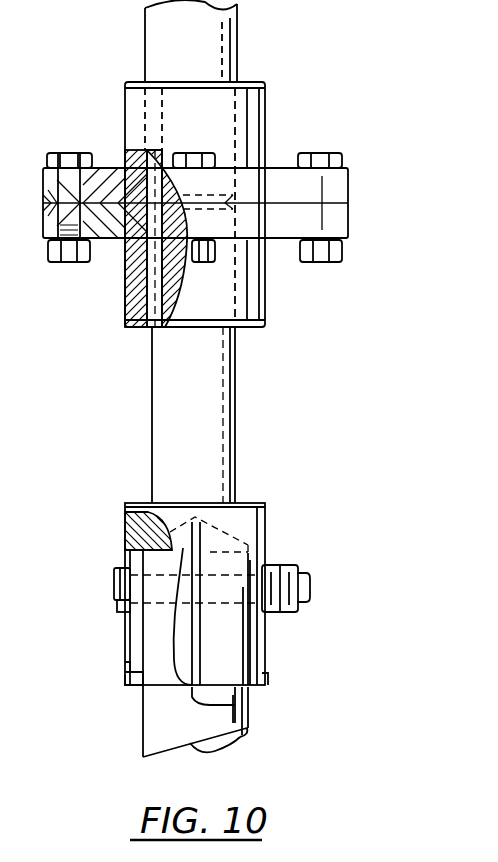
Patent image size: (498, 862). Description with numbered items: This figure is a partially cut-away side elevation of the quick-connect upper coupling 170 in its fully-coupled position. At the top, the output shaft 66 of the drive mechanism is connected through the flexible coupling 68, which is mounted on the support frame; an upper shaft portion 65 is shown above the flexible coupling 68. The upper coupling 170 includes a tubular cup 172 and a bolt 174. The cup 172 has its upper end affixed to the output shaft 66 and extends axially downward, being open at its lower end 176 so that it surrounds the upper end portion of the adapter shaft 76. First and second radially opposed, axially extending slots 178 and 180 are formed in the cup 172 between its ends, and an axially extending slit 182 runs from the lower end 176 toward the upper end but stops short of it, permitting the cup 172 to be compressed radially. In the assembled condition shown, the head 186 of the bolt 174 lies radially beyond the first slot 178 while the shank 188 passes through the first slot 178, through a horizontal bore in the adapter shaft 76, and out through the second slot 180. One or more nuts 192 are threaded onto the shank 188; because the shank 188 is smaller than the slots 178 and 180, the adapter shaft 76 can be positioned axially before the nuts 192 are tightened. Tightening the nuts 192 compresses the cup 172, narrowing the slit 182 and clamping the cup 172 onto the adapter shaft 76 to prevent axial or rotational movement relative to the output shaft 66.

The upper tube 65 is at (237, 32).
The flexible coupling 68 is at (263, 98).
The output shaft 66 is at (233, 420).
The adapter shaft 76 is at (143, 732).
The upper coupling 170 is at (230, 616).
The tubular cup 172 is at (125, 523).
The bolt 174 is at (112, 619).
The lower end 176 is at (138, 686).
The first slot 178 is at (128, 663).
The second slot 180 is at (263, 657).
The first slit 182 is at (248, 708).
The head 186 is at (114, 590).
The shank 188 is at (310, 590).
The nuts 192 is at (287, 565).